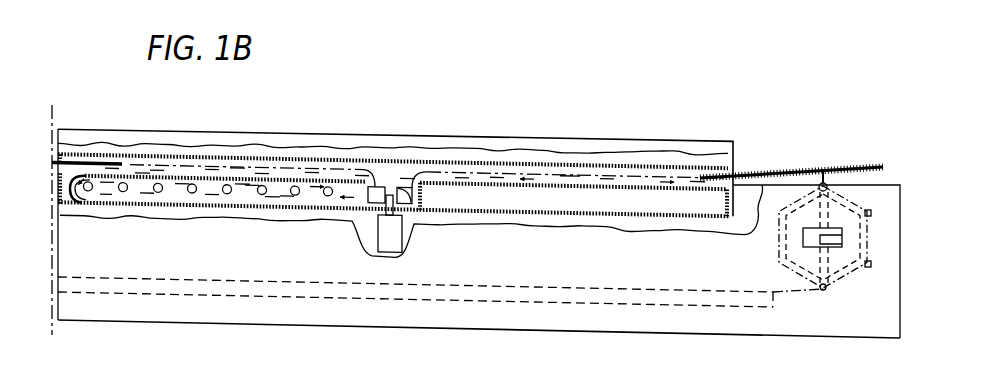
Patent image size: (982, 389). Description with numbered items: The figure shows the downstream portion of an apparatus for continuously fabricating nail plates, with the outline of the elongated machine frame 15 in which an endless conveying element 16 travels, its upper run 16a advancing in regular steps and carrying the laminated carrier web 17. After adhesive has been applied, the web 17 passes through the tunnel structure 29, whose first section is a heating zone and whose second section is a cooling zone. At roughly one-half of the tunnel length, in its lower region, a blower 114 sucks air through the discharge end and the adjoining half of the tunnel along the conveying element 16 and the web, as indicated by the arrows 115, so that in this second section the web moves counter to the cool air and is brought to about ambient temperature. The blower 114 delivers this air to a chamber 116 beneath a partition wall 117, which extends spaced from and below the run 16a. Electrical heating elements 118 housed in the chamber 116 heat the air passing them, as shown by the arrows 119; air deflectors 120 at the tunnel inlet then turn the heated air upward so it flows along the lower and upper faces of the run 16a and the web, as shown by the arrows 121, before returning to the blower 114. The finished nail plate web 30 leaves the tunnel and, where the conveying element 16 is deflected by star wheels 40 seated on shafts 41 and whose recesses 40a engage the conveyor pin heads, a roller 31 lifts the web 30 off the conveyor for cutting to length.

The machine frame 15 is at (646, 325).
The conveying element 16 is at (850, 196).
The run of the conveying element 16a is at (428, 139).
The laminated carrier web 17 is at (578, 177).
The tunnel structure 29 is at (374, 140).
The nail plate web 30 is at (794, 175).
The roller 31 is at (826, 182).
The star wheel 40 is at (838, 278).
The recess 40a is at (869, 214).
The shaft 41 is at (820, 240).
The blower 114 is at (403, 214).
The arrows indicating air flow 115 is at (493, 180).
The chamber 116 is at (243, 195).
The partition wall 117 is at (296, 181).
The electrical heating elements 118 is at (327, 189).
The arrows indicating heated air flow 119 is at (183, 193).
The air deflectors 120 is at (74, 203).
The arrows indicating heated air flow along the web 121 is at (137, 156).